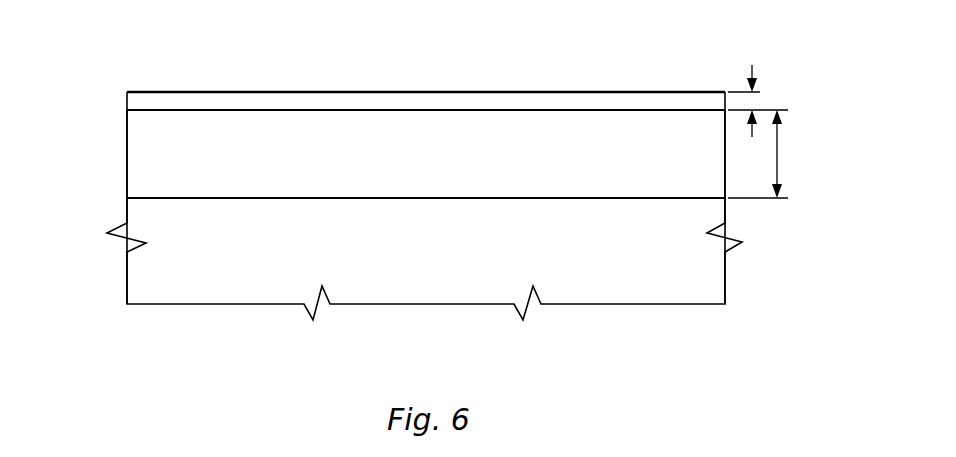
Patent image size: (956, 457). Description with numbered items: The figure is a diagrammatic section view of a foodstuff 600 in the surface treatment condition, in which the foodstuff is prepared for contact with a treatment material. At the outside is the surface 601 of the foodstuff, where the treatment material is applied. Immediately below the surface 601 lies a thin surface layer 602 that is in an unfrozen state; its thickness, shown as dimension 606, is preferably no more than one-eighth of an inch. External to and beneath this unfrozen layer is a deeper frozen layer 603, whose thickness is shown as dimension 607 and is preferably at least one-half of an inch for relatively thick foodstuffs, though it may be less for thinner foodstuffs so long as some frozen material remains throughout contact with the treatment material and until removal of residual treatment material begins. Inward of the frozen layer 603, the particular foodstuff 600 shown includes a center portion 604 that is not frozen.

The foodstuff 600 is at (632, 344).
The surface 601 is at (647, 92).
The thin surface layer 602 is at (288, 100).
The frozen layer 603 is at (180, 145).
The center portion 604 is at (655, 260).
The thickness of unfrozen layer 606 is at (752, 102).
The thickness of frozen layer 607 is at (778, 150).